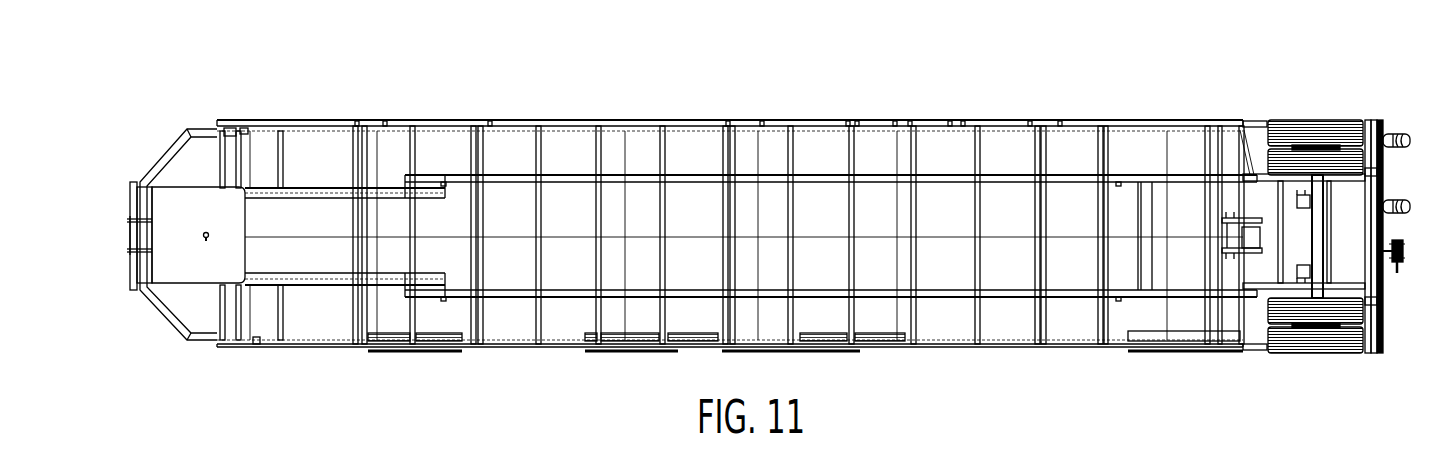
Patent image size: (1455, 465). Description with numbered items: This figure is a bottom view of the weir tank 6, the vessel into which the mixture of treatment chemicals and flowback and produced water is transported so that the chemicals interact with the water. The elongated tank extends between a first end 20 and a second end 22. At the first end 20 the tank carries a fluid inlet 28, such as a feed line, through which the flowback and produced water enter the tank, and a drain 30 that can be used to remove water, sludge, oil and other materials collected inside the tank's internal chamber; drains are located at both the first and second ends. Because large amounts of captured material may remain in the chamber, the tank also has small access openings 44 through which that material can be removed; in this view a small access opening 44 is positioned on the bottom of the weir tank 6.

The weir tank 6 is at (190, 88).
The first end 20 is at (1385, 324).
The second end 22 is at (163, 307).
The fluid inlet 28 is at (1411, 140).
The drain 30 is at (1406, 256).
The small access openings 44 is at (209, 233).